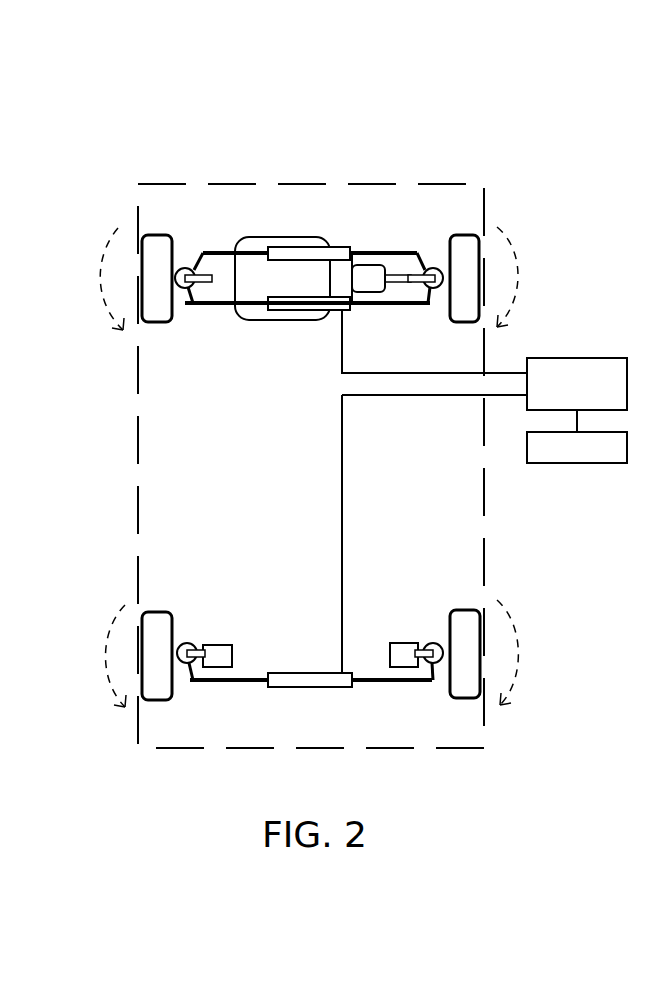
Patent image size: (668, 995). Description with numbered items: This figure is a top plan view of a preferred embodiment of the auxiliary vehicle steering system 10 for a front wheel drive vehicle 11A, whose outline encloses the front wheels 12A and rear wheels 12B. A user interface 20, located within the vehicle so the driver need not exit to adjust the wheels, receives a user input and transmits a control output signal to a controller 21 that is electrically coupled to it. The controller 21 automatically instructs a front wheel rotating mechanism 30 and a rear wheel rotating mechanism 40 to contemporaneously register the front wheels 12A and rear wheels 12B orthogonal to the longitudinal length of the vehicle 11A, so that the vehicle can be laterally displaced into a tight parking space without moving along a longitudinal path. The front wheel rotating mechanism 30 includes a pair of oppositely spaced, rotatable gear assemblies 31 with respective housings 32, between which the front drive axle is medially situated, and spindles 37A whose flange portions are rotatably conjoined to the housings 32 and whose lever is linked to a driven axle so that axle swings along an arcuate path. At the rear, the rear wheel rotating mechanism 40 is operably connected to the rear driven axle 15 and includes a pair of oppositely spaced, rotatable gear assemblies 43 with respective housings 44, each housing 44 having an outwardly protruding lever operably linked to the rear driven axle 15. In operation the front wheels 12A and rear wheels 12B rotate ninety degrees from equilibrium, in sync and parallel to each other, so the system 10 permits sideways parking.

The auxiliary vehicle steering system 10 is at (505, 132).
The front wheel drive vehicle 11A is at (484, 472).
The front wheels 12A is at (148, 267).
The rear wheels 12B is at (157, 647).
The rear driven axle 15 is at (312, 688).
The user interface 20 is at (577, 463).
The controller 21 is at (577, 358).
The front wheel rotating mechanism 30 is at (184, 266).
The gear assemblies 31 is at (200, 295).
The housings 32 is at (190, 303).
The spindles 37A is at (417, 252).
The rear wheel rotating mechanism 40 is at (200, 643).
The gear assemblies 43 is at (200, 685).
The housings 44 is at (187, 643).